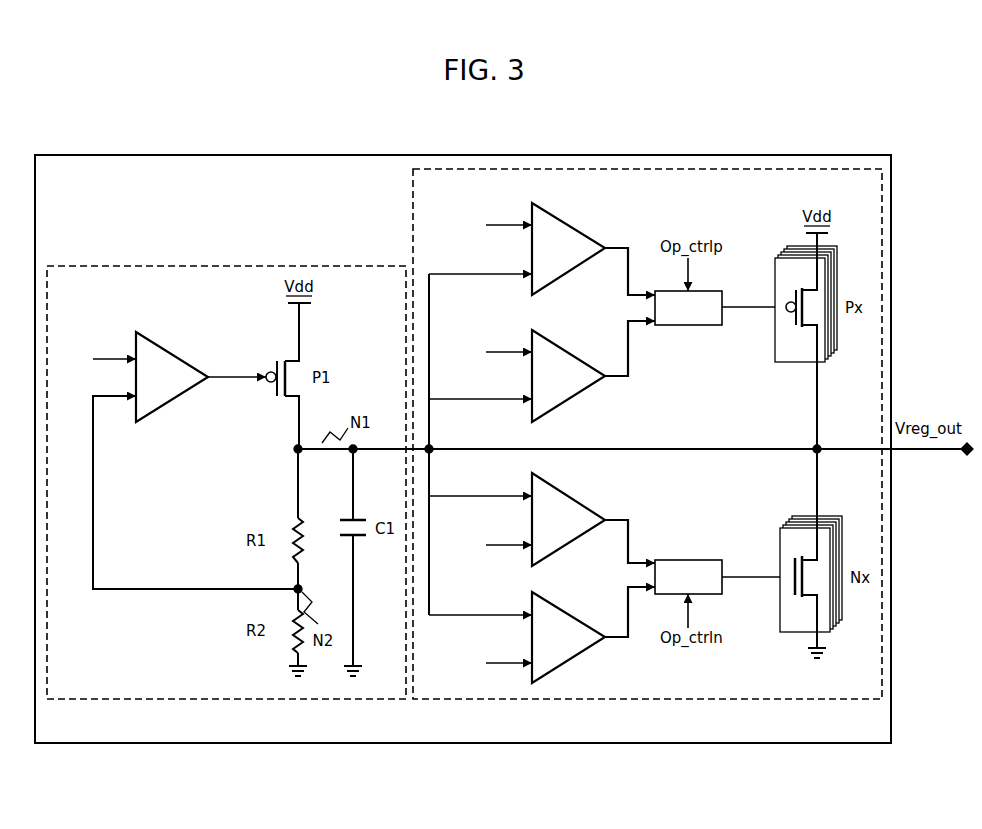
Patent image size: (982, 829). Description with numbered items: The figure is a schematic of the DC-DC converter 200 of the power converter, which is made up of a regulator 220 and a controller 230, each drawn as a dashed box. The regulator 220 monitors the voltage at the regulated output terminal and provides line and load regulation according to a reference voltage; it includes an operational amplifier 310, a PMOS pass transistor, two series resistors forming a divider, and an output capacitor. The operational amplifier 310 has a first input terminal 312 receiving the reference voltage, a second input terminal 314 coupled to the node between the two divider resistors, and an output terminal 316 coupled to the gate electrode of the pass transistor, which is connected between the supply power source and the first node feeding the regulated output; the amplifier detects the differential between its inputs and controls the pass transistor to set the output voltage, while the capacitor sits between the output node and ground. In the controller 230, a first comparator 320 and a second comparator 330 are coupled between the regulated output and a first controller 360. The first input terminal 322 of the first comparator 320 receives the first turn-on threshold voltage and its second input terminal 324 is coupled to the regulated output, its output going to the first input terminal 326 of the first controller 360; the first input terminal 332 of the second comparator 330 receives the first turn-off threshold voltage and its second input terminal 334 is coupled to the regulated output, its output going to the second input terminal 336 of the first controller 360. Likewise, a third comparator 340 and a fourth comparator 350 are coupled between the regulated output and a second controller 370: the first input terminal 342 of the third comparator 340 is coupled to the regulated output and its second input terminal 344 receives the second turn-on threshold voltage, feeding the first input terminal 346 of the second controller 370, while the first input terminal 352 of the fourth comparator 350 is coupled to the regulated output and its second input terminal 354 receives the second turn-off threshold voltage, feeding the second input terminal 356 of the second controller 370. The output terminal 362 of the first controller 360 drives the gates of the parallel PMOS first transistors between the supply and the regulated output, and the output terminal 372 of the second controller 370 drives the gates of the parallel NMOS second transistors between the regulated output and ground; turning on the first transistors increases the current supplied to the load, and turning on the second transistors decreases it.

The DC-DC converter 200 is at (463, 479).
The regulator 220 is at (226, 502).
The controller 230 is at (647, 453).
The operational amplifier 310 is at (181, 360).
The first input terminal 312 is at (98, 328).
The second input terminal 314 is at (195, 492).
The output terminal 316 is at (235, 408).
The first comparator 320 is at (568, 376).
The first input terminal 322 is at (483, 368).
The second input terminal 324 is at (480, 420).
The first input terminal 326 is at (641, 375).
The second comparator 330 is at (598, 247).
The first input terminal 332 is at (481, 242).
The second input terminal 334 is at (480, 296).
The second input terminal 336 is at (630, 257).
The third comparator 340 is at (568, 519).
The first input terminal 342 is at (480, 478).
The second input terminal 344 is at (485, 532).
The first input terminal 346 is at (647, 520).
The fourth comparator 350 is at (568, 637).
The first input terminal 352 is at (480, 598).
The second input terminal 354 is at (483, 651).
The second input terminal 356 is at (637, 638).
The first controller 360 is at (688, 308).
The output terminal 362 is at (754, 343).
The second controller 370 is at (688, 577).
The output terminal 372 is at (755, 547).